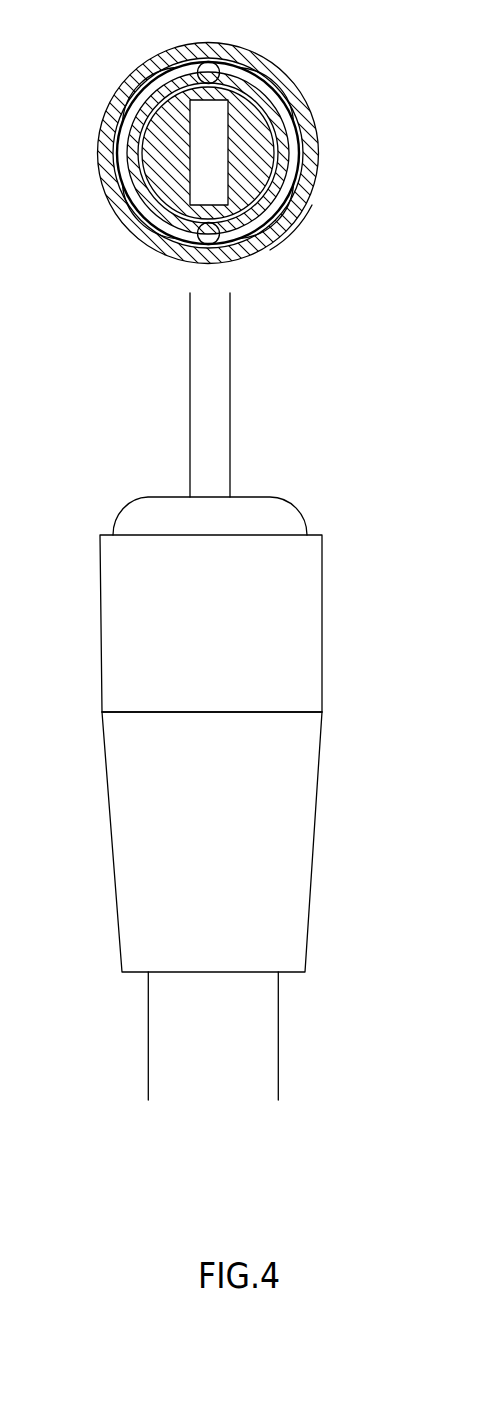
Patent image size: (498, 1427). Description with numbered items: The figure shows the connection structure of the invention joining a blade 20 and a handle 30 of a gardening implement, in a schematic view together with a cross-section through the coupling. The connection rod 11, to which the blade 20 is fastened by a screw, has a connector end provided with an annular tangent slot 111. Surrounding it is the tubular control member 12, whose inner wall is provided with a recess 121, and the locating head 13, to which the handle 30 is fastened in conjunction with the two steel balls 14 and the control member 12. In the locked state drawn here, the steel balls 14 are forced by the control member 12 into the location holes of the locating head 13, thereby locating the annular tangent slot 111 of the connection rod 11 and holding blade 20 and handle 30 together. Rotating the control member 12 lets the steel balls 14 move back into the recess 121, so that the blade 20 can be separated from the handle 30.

The connection rod 11 is at (135, 510).
The control member 12 is at (273, 75).
The locating head 13 is at (125, 106).
The steel balls 14 is at (208, 72).
The blade 20 is at (200, 170).
The handle 30 is at (158, 1028).
The annular tangent slot 111 is at (283, 163).
The recess 121 is at (302, 213).